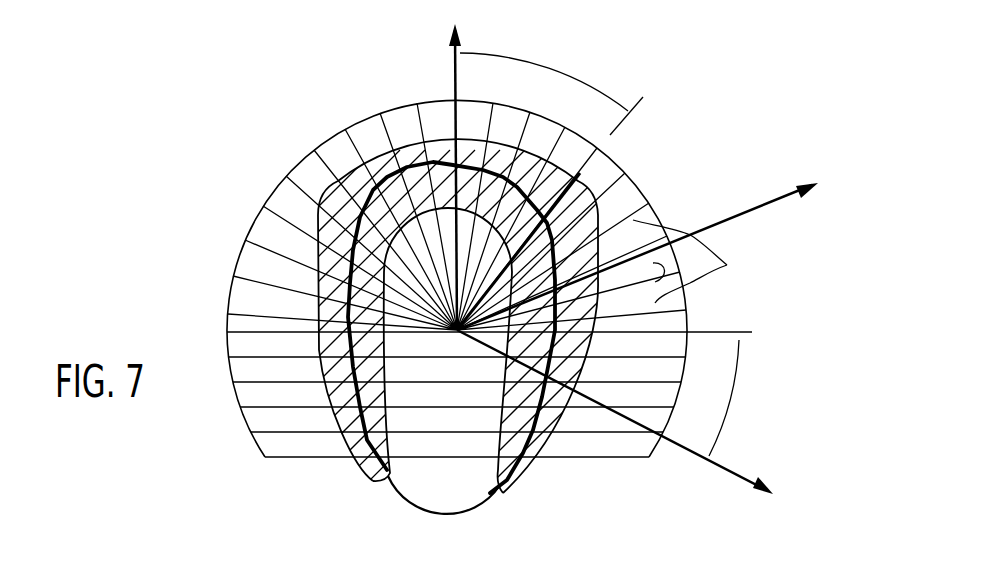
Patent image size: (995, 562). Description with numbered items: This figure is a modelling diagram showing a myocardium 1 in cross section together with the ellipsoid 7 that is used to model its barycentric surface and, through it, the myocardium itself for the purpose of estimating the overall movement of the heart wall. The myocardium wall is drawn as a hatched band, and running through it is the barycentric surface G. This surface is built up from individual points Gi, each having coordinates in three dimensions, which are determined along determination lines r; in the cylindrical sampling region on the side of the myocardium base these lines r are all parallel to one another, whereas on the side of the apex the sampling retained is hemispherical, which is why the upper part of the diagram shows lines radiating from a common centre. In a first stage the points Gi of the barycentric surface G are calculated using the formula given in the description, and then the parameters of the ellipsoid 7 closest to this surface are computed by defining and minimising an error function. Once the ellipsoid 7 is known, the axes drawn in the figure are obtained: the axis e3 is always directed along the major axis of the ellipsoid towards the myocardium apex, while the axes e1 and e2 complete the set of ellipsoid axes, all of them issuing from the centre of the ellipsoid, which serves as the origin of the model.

The envelope hull 1 is at (356, 476).
The ellipsoid 7 is at (482, 501).
The barycentric surface G is at (338, 251).
The points of the barycentric surface Gi is at (372, 188).
The point P on contour P is at (578, 167).
The determination lines of the barycentric surface r is at (689, 261).
The axis e1 is at (813, 475).
The axis e2 is at (862, 170).
The axis e3 is at (505, 13).